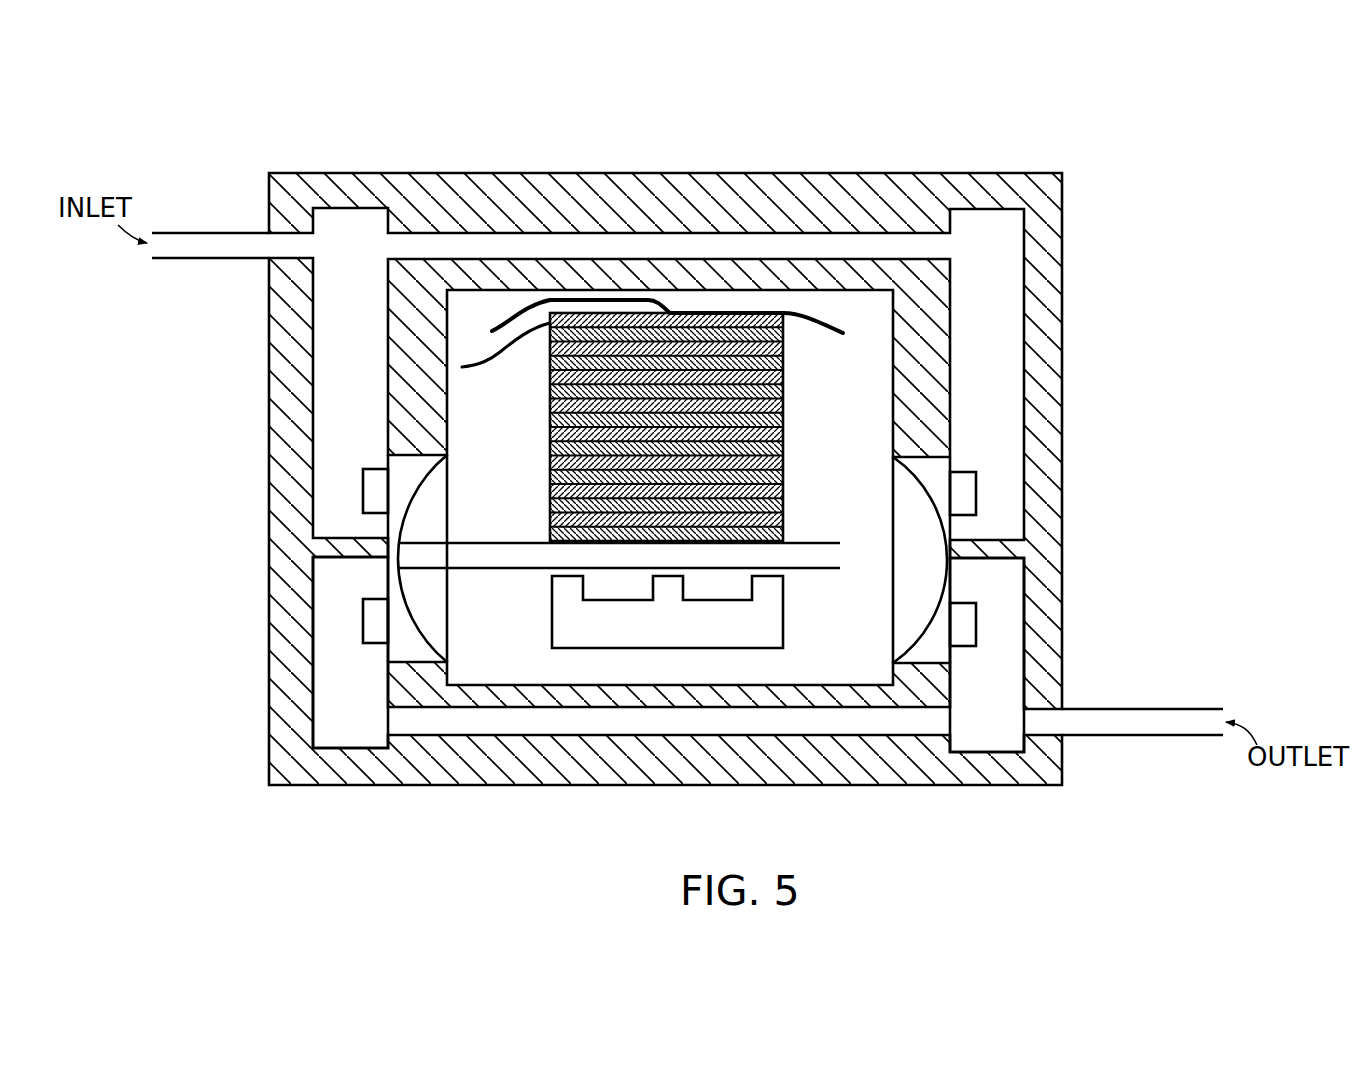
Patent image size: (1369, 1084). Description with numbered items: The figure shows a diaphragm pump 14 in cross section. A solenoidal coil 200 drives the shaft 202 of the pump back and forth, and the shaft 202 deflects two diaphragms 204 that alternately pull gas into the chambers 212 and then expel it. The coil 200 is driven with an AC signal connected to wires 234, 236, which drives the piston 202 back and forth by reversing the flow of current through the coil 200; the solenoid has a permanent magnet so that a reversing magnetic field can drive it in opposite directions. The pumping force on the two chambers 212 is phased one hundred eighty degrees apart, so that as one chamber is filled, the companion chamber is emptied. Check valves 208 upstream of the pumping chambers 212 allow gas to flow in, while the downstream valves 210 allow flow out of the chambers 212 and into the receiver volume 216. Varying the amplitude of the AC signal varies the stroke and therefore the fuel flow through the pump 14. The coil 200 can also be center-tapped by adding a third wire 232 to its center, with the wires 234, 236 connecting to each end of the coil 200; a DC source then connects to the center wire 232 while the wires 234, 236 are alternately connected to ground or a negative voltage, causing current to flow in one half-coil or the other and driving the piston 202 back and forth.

The pump 14 is at (1081, 125).
The solenoidal coil 200 is at (690, 313).
The shaft 202 is at (528, 558).
The diaphragm 204 is at (420, 637).
The check valve 208 is at (363, 497).
The downstream valve 210 is at (362, 627).
The chamber 212 is at (417, 655).
The receiver volume 216 is at (352, 728).
The third wire 232 is at (498, 331).
The wire 234 is at (823, 327).
The wire 236 is at (478, 363).